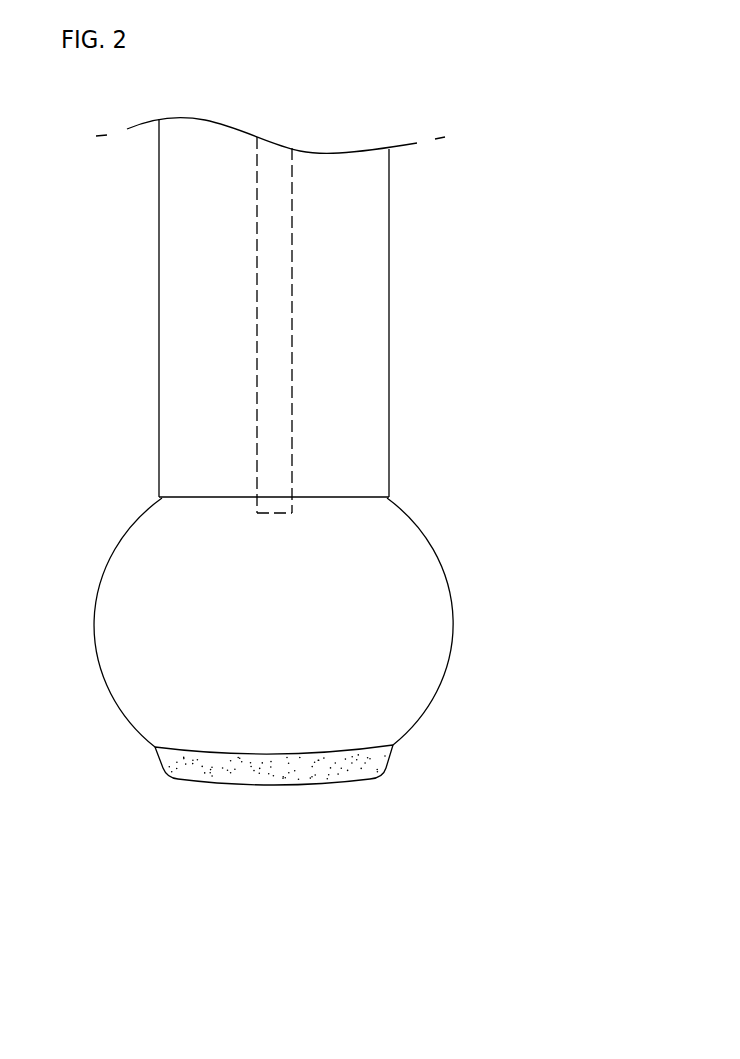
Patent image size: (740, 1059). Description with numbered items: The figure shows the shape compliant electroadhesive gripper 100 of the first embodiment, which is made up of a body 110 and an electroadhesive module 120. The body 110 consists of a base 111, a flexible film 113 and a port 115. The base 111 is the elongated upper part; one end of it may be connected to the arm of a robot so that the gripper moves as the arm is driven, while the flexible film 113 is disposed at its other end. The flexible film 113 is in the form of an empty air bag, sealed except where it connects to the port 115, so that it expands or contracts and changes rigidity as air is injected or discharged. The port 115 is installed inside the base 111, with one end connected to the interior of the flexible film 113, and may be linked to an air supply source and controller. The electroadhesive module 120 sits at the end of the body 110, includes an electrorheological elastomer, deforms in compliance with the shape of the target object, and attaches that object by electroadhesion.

The shape compliant electroadhesive gripper 100 is at (363, 497).
The body 110 is at (363, 433).
The base 111 is at (389, 298).
The flexible film 113 is at (321, 622).
The port 115 is at (292, 393).
The electroadhesive module 120 is at (353, 770).